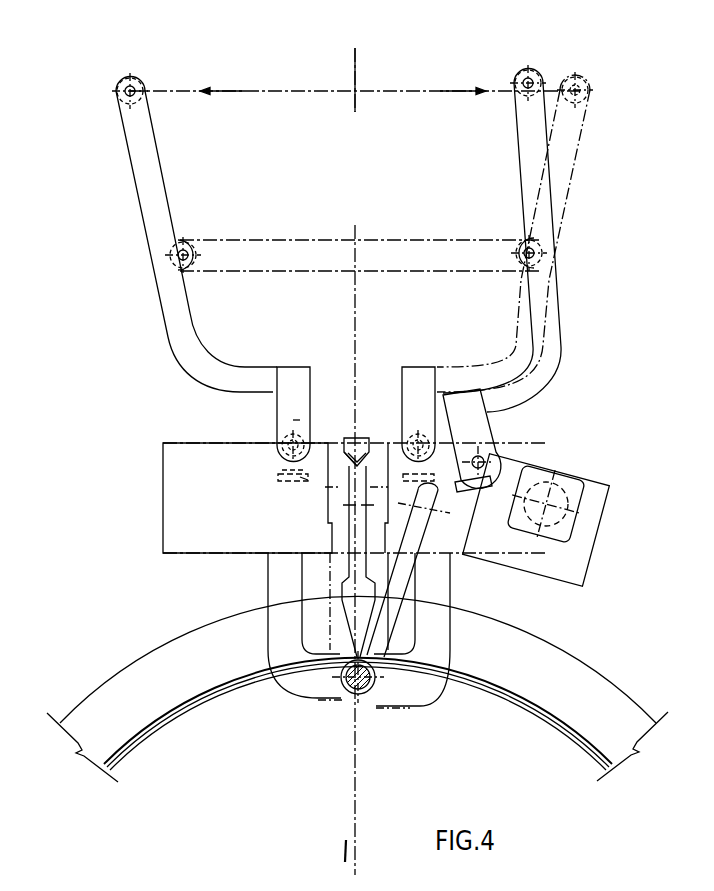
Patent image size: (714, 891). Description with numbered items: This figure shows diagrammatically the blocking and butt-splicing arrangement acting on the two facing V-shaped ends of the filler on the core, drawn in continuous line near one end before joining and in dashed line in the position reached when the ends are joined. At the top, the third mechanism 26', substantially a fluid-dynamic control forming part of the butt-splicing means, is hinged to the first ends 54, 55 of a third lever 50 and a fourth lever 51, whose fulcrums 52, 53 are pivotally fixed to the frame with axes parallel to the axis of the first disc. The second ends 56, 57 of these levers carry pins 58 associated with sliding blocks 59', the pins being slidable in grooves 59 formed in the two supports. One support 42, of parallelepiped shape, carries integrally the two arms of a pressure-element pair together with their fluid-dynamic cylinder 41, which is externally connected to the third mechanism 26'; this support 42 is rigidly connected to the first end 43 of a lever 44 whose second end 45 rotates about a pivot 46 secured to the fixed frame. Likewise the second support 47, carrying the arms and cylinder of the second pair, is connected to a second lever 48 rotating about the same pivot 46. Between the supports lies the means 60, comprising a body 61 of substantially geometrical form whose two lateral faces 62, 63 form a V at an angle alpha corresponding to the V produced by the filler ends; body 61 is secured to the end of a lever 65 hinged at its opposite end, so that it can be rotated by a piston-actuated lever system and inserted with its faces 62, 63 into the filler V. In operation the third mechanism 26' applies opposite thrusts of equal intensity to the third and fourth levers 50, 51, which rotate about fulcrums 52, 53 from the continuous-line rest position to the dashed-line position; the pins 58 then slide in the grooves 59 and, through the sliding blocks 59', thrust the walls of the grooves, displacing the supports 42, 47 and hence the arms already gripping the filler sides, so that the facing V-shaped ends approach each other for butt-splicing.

The third mechanism 26' is at (311, 61).
The fluid-dynamic cylinder 41 is at (558, 525).
The support 42 is at (555, 563).
The first end of lever 43 is at (482, 567).
The lever 44 is at (463, 583).
The second end of lever 45 is at (373, 690).
The pivot 46 is at (355, 692).
The second support 47 is at (177, 525).
The second lever 48 is at (283, 577).
The third lever 50 is at (553, 313).
The fourth lever 51 is at (173, 317).
The fulcrum of third lever 52 is at (537, 252).
The fulcrum of fourth lever 53 is at (178, 255).
The first end of third lever 54 is at (530, 70).
The first end of fourth lever 55 is at (124, 91).
The second end of third lever 56 is at (467, 417).
The second end of fourth lever 57 is at (293, 420).
The pins 58 is at (287, 450).
The grooves 59 is at (277, 477).
The sliding blocks 59' is at (285, 512).
The means 60 is at (360, 430).
The body 61 is at (357, 437).
The lateral face 62 is at (373, 450).
The lateral face 63 is at (345, 452).
The lever 65 is at (337, 480).